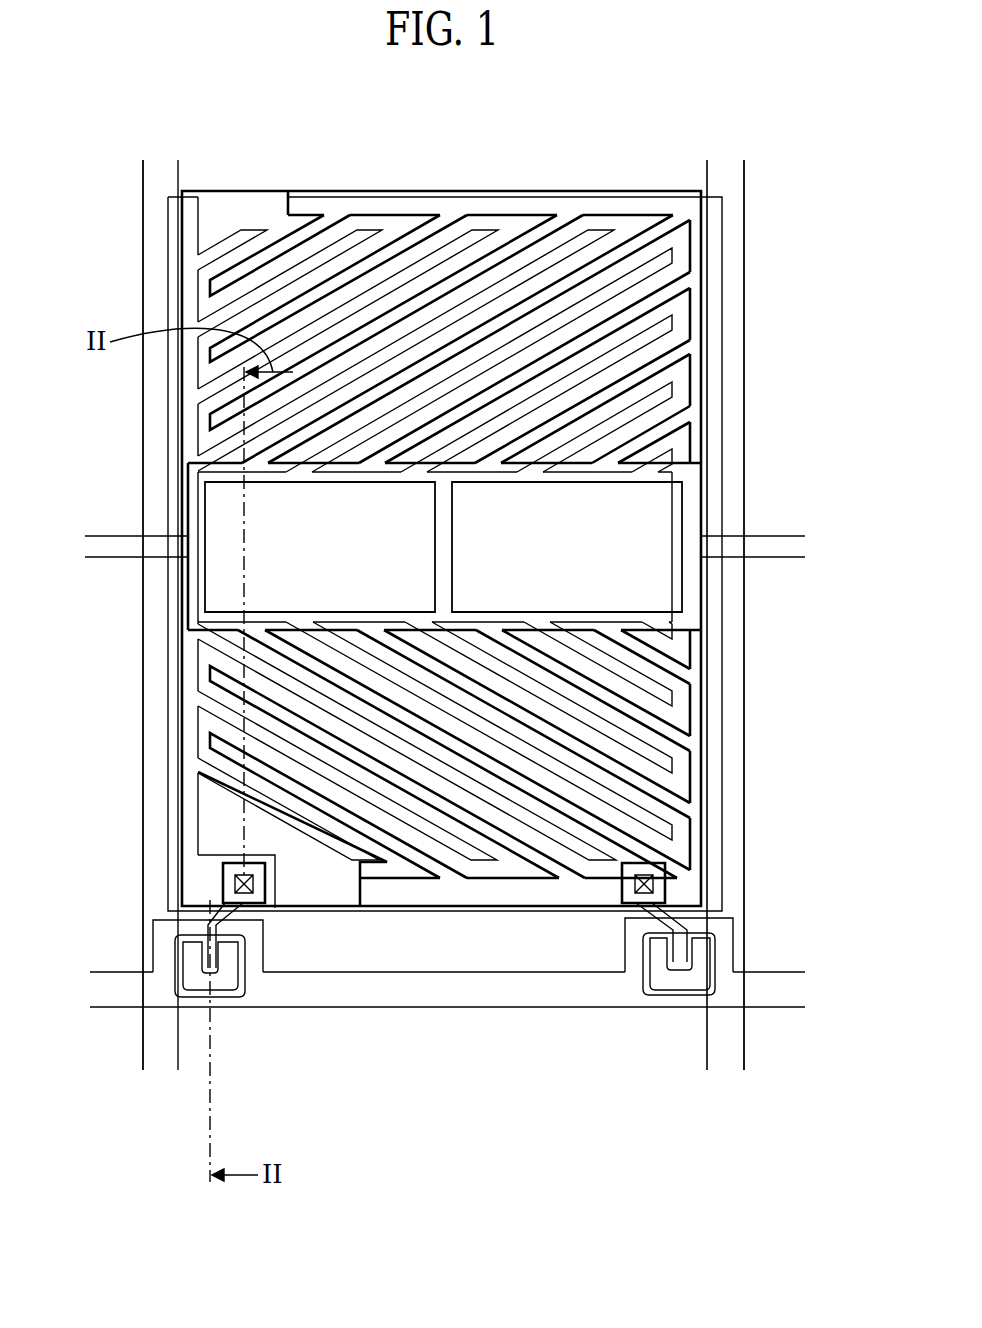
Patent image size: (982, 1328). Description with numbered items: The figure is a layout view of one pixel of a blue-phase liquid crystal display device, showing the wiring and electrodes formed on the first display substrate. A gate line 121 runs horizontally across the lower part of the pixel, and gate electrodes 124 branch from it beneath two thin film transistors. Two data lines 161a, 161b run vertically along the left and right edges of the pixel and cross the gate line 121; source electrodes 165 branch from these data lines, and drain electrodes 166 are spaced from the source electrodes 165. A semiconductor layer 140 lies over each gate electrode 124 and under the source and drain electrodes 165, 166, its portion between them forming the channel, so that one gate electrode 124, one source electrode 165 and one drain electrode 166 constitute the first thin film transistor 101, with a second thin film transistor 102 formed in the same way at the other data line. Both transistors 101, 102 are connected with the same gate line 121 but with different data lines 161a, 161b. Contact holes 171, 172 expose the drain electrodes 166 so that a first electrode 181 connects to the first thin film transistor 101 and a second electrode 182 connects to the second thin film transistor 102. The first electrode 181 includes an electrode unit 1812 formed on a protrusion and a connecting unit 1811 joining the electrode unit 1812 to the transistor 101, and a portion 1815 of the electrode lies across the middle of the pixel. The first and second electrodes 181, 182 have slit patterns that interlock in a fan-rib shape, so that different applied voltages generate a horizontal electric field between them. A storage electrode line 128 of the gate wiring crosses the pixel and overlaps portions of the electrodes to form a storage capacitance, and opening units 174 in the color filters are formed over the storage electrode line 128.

The first thin film transistor 101 is at (274, 1026).
The second thin film transistor 102 is at (648, 996).
The gate line 121 is at (447, 1012).
The gate electrode 124 is at (263, 965).
The storage electrode line 128 is at (100, 537).
The semiconductor layer 140 is at (197, 1000).
The data line 161a is at (146, 1047).
The data line 161b is at (709, 1048).
The source electrode 165 is at (232, 1000).
The drain electrode 166 is at (290, 975).
The contact hole 171 is at (235, 880).
The contact hole 172 is at (657, 880).
The opening unit 174 is at (676, 583).
The first electrode 181 is at (389, 554).
The connecting unit 1811 is at (170, 771).
The electrode unit 1812 is at (222, 742).
The connecting portion of first pixel electrode 1815 is at (222, 583).
The second electrode 182 is at (612, 862).